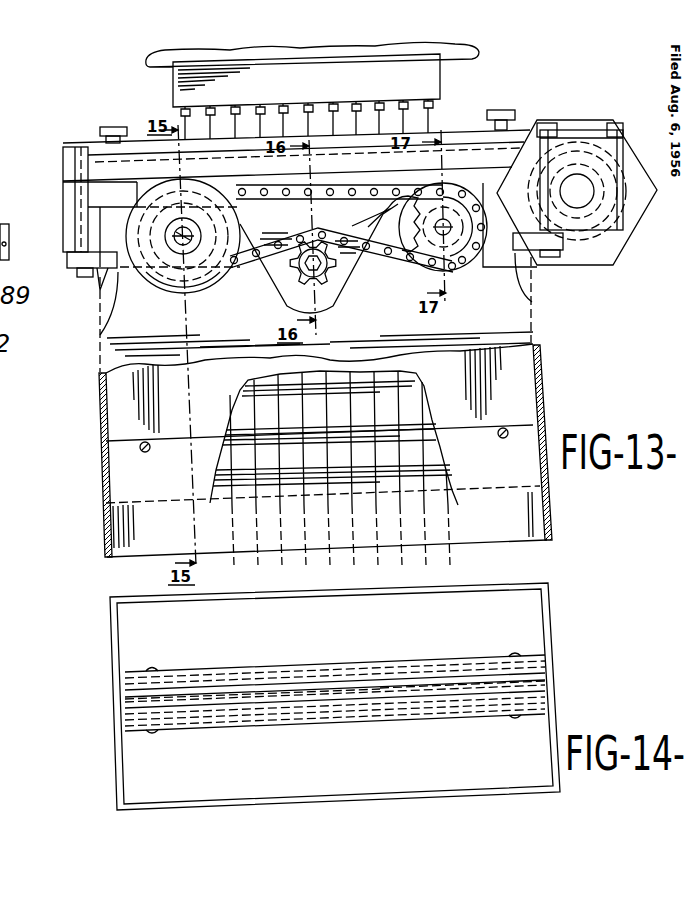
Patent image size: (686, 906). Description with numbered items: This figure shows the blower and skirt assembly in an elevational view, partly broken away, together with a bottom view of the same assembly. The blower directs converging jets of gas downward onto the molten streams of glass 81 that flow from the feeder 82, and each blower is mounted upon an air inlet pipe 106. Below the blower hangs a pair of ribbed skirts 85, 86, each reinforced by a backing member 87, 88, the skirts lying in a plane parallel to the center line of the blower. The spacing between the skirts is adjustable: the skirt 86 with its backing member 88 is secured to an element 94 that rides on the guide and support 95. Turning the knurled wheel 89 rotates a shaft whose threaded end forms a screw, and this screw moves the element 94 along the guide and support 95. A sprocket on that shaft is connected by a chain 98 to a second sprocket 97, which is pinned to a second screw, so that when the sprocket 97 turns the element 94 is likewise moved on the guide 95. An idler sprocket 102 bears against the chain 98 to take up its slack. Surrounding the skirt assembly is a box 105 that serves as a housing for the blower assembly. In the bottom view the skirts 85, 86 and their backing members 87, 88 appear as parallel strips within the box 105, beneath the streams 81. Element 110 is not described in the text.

In FIG. 13, the molten streams of glass 81 is at (412, 120).
In FIG. 14, the molten streams of glass 81 is at (407, 690).
In FIG. 13, the feeder 82 is at (440, 73).
In FIG. 13, the skirt 85 is at (230, 500).
In FIG. 14, the skirt 85 is at (273, 708).
In FIG. 14, the skirt 86 is at (243, 657).
In FIG. 14, the backing member 87 is at (327, 717).
In FIG. 13, the backing member 88 is at (115, 407).
In FIG. 14, the backing member 88 is at (307, 655).
In FIG. 13, the knurled wheel 89 is at (160, 292).
In FIG. 13, the element 94 is at (100, 320).
In FIG. 13, the guide and support 95 is at (100, 290).
In FIG. 13, the sprocket 97 is at (458, 265).
In FIG. 13, the chain 98 is at (250, 280).
In FIG. 13, the idler sprocket 102 is at (327, 285).
In FIG. 13, the box 105 is at (540, 368).
In FIG. 14, the box 105 is at (553, 602).
In FIG. 13, the air inlet pipe 106 is at (603, 257).
In FIG. 13, the housing cover 110 is at (623, 247).